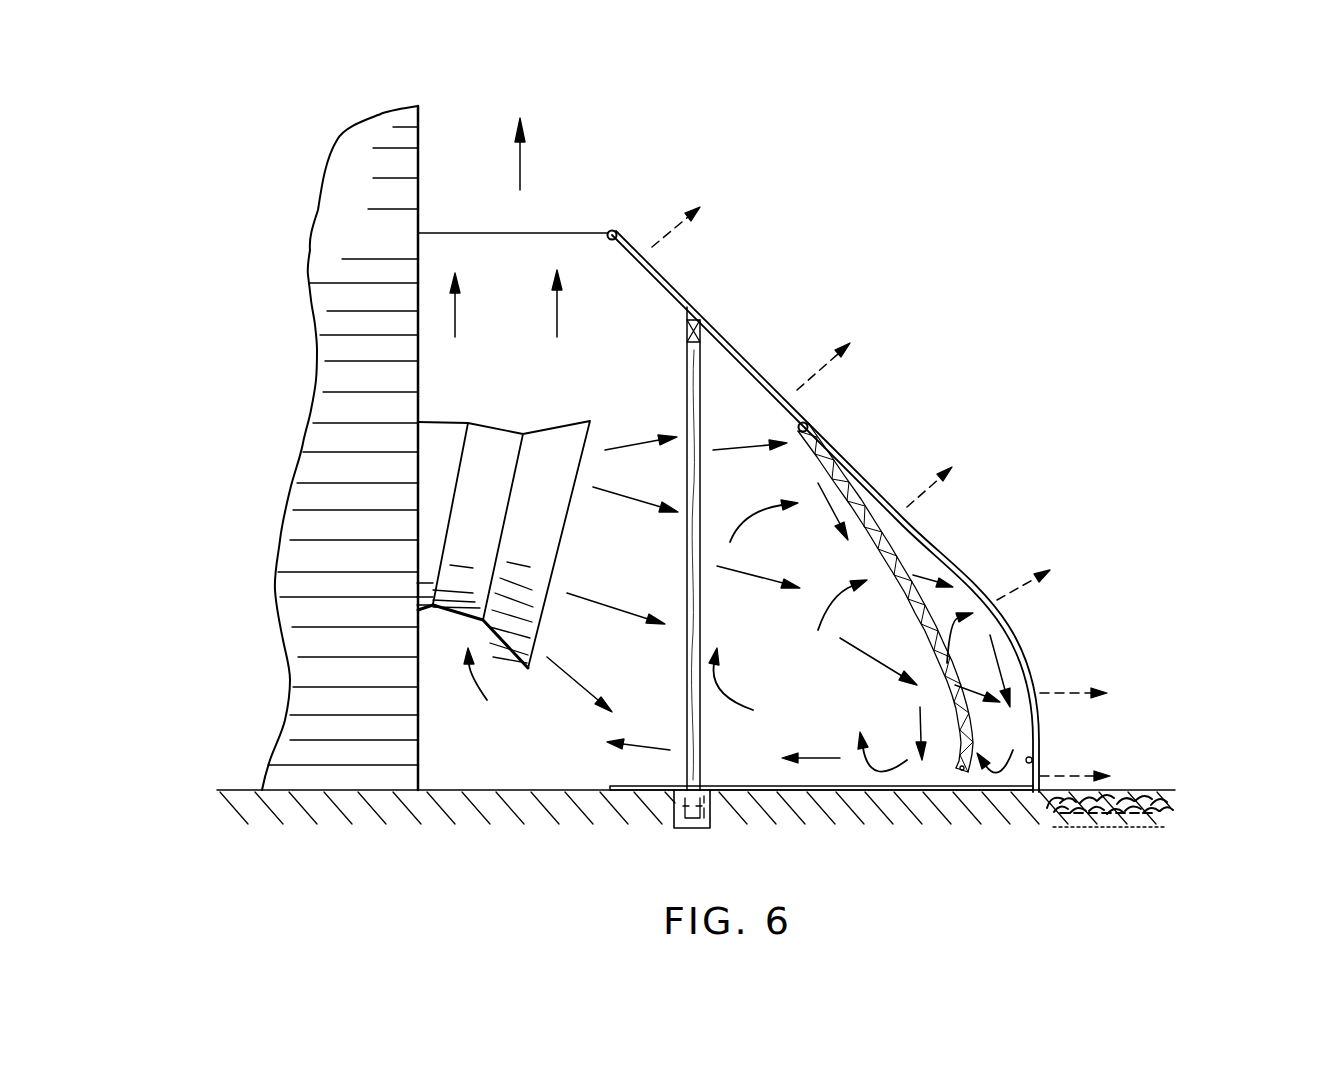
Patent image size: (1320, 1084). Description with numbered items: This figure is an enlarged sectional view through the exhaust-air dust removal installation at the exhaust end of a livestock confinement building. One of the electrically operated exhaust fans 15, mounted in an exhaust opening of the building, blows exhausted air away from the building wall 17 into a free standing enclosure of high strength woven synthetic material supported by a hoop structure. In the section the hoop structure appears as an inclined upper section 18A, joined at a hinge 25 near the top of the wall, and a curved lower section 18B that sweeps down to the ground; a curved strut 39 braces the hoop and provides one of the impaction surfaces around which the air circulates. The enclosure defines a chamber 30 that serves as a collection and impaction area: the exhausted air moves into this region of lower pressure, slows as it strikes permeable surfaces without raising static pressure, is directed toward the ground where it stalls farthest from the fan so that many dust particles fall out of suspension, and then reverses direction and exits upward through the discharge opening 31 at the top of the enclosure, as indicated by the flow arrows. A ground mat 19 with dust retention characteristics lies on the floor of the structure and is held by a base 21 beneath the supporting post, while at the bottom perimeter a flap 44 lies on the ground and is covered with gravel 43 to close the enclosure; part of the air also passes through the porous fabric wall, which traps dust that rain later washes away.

The exhaust fans 15 is at (510, 433).
The wall 17 is at (337, 348).
The inclined panel 18A is at (670, 287).
The curved panel 18B is at (1013, 640).
The floor strip 19 is at (685, 762).
The base / anchor 21 is at (680, 830).
The hinge 25 is at (618, 227).
The air space 30 is at (648, 587).
The top rail 31 is at (520, 258).
The truss strut 39 is at (887, 547).
The ground vegetation 43 is at (1138, 797).
The drain / vent 44 is at (1080, 812).